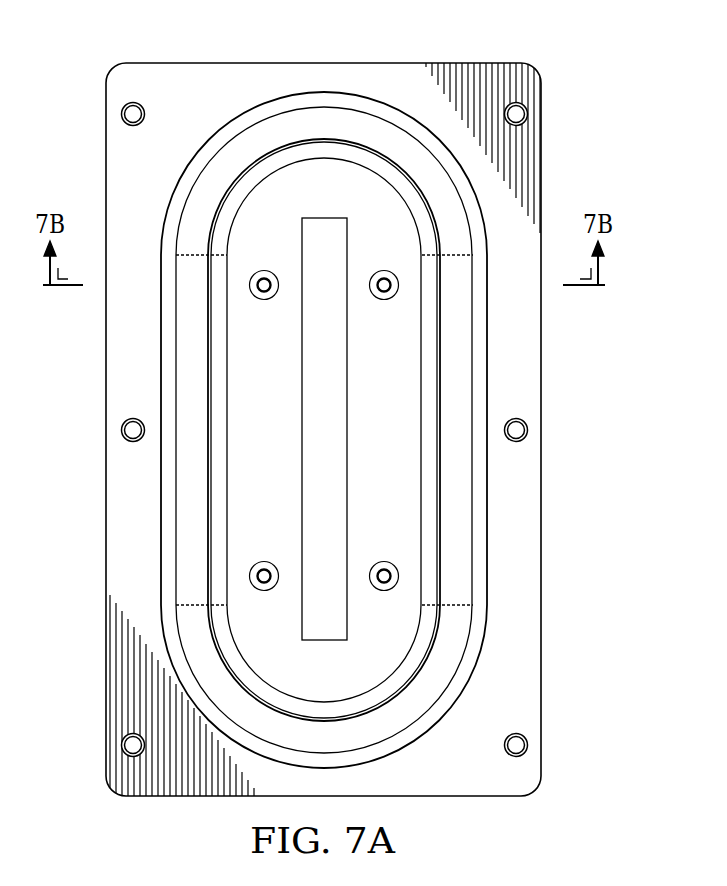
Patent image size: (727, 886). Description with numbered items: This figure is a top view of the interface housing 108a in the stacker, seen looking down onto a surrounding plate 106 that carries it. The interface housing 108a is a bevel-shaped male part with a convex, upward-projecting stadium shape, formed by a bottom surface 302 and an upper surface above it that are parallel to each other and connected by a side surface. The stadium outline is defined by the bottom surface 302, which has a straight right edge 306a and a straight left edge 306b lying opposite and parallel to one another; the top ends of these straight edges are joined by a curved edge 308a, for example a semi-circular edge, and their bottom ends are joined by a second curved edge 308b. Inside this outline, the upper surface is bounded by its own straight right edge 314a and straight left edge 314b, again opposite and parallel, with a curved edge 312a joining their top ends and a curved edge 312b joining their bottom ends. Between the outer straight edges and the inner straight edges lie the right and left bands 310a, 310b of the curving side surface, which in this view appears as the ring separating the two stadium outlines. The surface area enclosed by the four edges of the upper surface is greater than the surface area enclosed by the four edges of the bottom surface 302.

The mounting plate 106 is at (262, 73).
The interface housing 108a is at (383, 193).
The bottom surface 302 is at (402, 363).
The straight right edge 306a is at (488, 403).
The straight left edge 306b is at (157, 449).
The curved edge 308a is at (235, 122).
The curved edge 308b is at (422, 733).
The right groove 310a is at (455, 553).
The left groove 310b is at (192, 325).
The curved edge 312a is at (220, 213).
The curved edge 312b is at (430, 652).
The straight right edge 314a is at (438, 475).
The straight left edge 314b is at (213, 403).